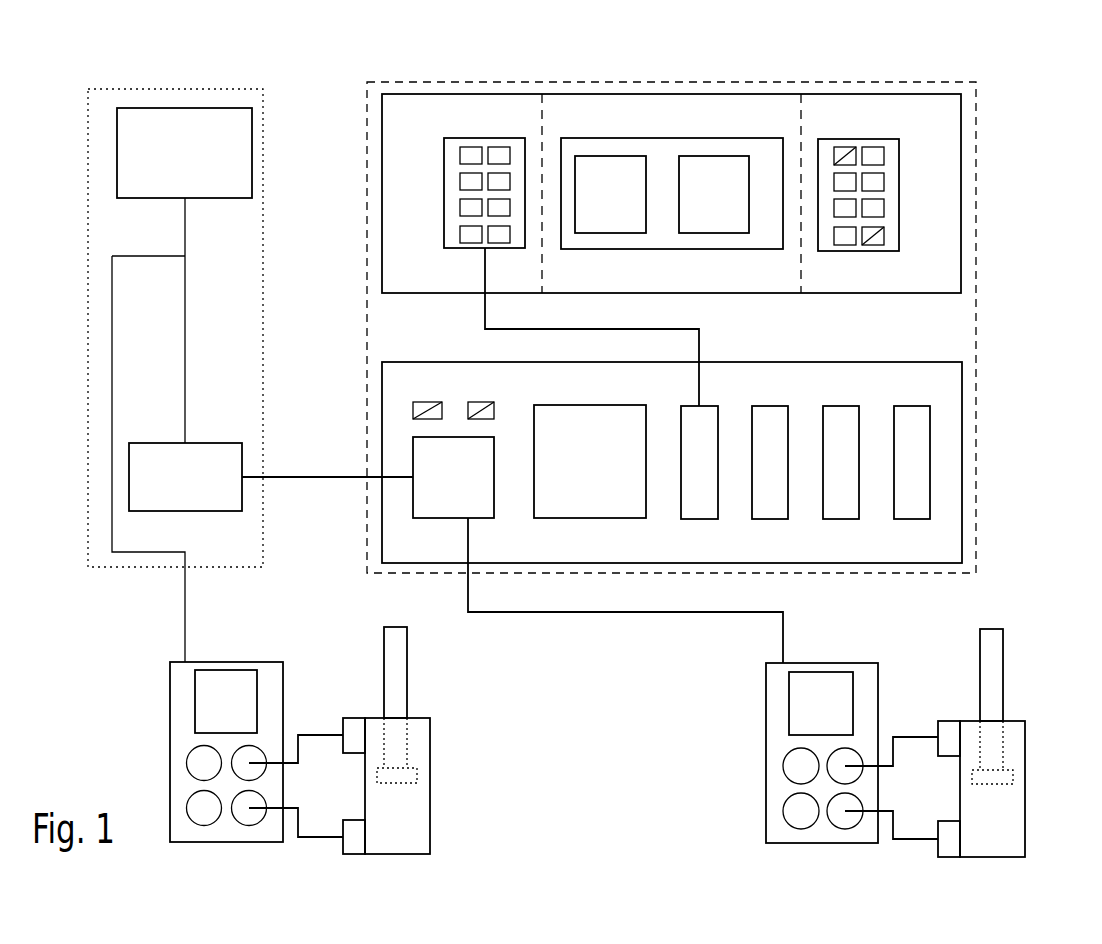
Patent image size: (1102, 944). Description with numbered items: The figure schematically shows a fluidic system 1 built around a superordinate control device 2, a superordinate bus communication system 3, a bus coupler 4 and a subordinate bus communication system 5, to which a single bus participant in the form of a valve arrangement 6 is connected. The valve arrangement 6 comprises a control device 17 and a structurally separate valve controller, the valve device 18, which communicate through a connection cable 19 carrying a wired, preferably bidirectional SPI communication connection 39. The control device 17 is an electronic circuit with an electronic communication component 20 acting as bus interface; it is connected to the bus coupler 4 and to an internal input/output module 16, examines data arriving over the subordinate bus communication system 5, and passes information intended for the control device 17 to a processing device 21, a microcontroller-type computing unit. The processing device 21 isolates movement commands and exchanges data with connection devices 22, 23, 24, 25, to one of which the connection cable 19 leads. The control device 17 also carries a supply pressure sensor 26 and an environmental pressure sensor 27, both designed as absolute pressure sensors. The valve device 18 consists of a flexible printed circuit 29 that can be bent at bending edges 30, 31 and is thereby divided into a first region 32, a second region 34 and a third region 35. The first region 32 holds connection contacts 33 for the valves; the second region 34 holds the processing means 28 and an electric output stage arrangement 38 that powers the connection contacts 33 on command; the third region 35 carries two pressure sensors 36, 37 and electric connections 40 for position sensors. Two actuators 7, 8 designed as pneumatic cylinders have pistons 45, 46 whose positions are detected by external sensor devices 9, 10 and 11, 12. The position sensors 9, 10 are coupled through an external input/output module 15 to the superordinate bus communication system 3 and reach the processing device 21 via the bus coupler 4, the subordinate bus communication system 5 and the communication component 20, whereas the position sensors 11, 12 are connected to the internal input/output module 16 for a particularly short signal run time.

The fluidic system 1 is at (985, 128).
The superordinate control device 2 is at (209, 128).
The superordinate bus communication system 3 is at (139, 353).
The bus coupler 4 is at (147, 493).
The subordinate bus communication system 5 is at (290, 477).
The valve arrangement 6 is at (978, 328).
The actuator 7 is at (433, 761).
The actuator 8 is at (1023, 743).
The external sensor device 9 is at (355, 727).
The external sensor device 10 is at (355, 850).
The external sensor device 11 is at (948, 727).
The external sensor device 12 is at (950, 850).
The input/output module 15 is at (270, 675).
The input/output module 16 is at (778, 732).
The control device 17 is at (962, 372).
The valve device 18 is at (897, 94).
The connection cable 19 is at (484, 310).
The electronic communication component 20 is at (428, 505).
The processing device 21 is at (560, 505).
The connection device 22 is at (705, 510).
The connection device 23 is at (773, 487).
The connection device 24 is at (843, 463).
The connection device 25 is at (918, 425).
The supply pressure sensor 26 is at (413, 408).
The environmental pressure sensor 27 is at (472, 402).
The processing means 28 is at (603, 168).
The printed circuit 29 is at (758, 110).
The bending edge 30 is at (542, 110).
The bending edge 31 is at (802, 125).
The first region 32 is at (418, 125).
The connection contacts 33 is at (470, 155).
The second region 34 is at (642, 122).
The third region 35 is at (932, 120).
The pressure sensor 36 is at (923, 145).
The pressure sensor 37 is at (880, 238).
The electric output stage arrangement 38 is at (698, 168).
The communication connection 39 is at (475, 275).
The electric connections 40 is at (873, 184).
The piston 45 is at (400, 745).
The piston 46 is at (993, 750).